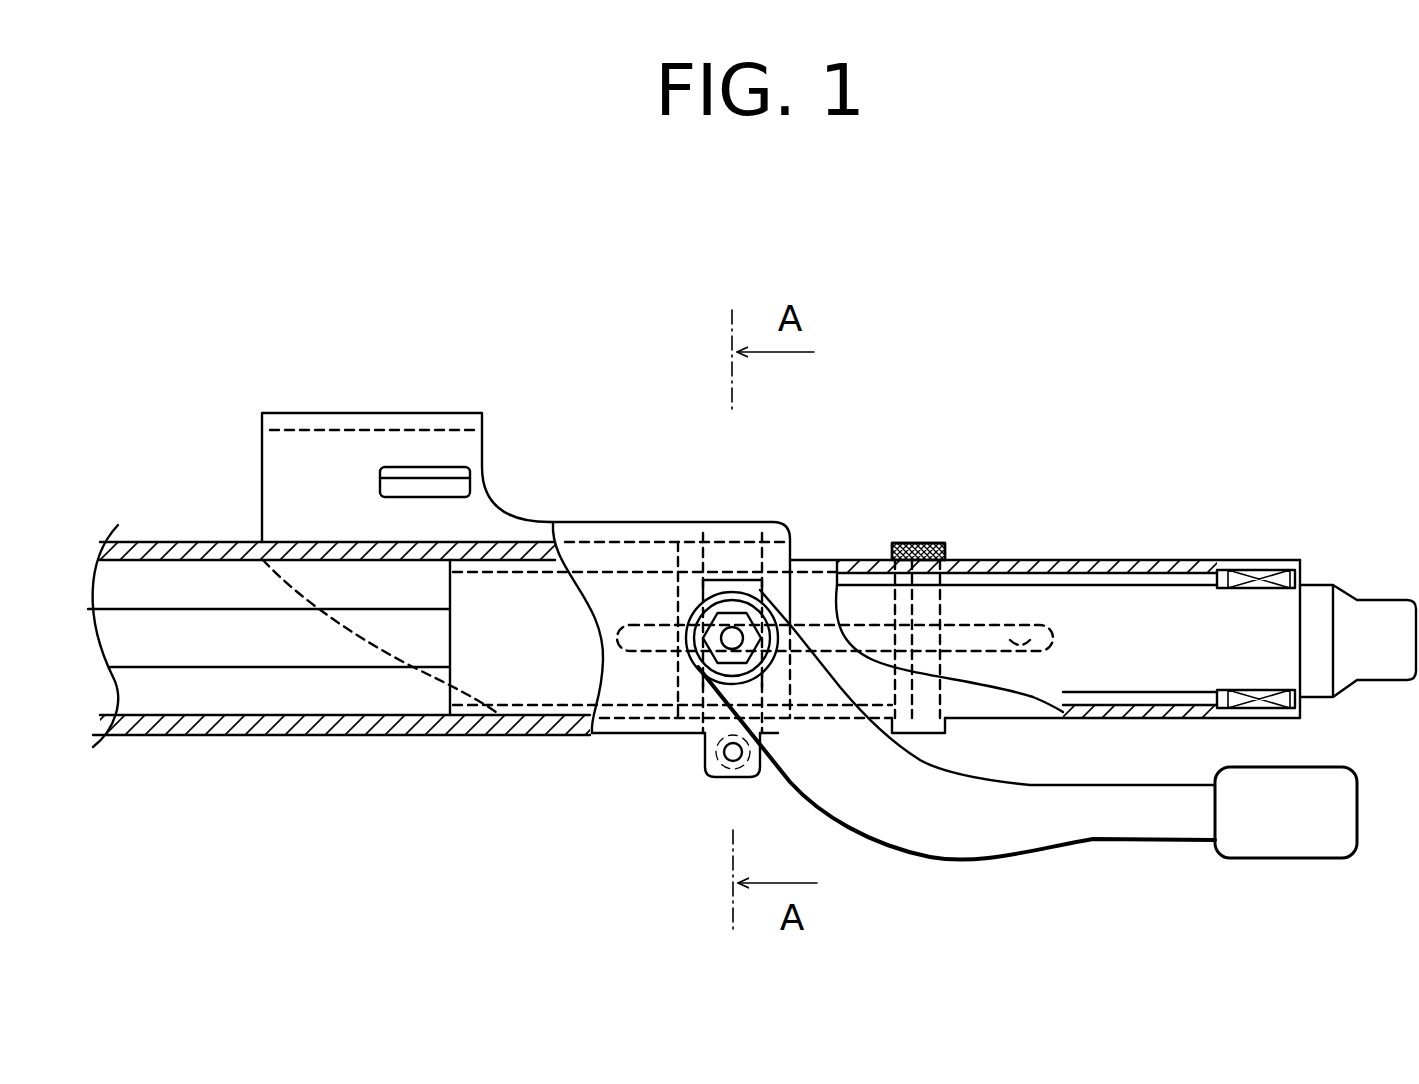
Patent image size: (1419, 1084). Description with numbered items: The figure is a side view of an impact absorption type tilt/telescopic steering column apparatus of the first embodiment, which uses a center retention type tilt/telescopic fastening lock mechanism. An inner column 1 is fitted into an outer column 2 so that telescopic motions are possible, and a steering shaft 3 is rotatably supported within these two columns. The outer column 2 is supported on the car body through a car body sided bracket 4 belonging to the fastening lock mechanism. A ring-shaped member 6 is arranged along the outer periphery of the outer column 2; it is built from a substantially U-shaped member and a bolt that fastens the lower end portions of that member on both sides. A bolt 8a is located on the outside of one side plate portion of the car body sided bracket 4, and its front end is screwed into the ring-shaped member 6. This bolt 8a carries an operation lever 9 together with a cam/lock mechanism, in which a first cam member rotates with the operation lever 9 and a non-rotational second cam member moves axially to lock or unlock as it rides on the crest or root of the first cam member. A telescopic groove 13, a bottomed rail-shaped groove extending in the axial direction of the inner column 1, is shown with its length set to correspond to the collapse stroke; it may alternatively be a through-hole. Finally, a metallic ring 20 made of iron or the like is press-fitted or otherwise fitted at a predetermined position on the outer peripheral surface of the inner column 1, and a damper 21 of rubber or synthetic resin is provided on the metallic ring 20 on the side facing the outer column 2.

The inner column 1 is at (1173, 557).
The outer column 2 is at (158, 540).
The steering shaft 3 is at (1350, 585).
The car body sided bracket 4 is at (430, 412).
The ring-shaped member 6 is at (715, 782).
The bolt 8a is at (700, 668).
The operation lever 9 is at (1003, 857).
The telescopic groove 13 is at (1035, 625).
The metallic ring 20 is at (923, 542).
The damper 21 is at (900, 542).